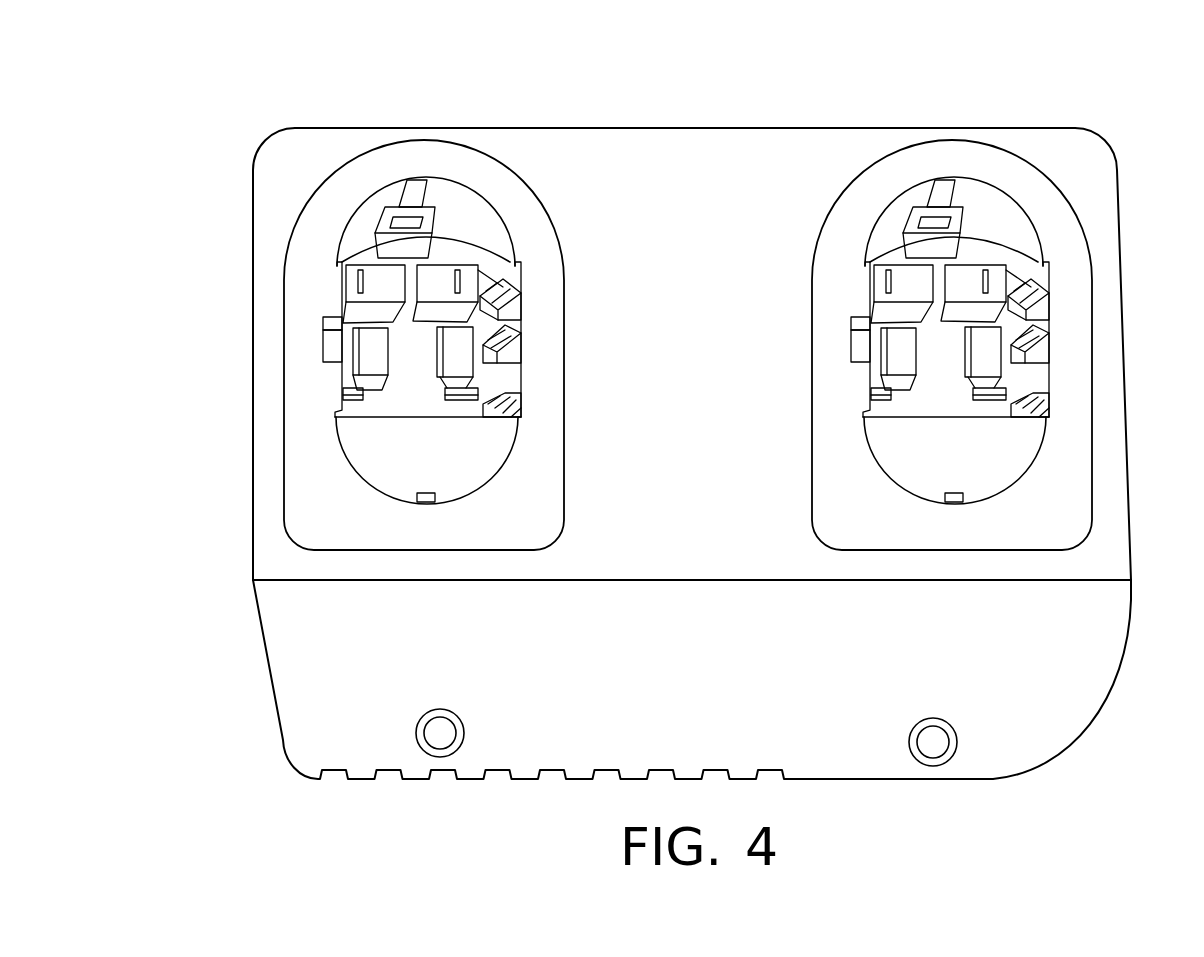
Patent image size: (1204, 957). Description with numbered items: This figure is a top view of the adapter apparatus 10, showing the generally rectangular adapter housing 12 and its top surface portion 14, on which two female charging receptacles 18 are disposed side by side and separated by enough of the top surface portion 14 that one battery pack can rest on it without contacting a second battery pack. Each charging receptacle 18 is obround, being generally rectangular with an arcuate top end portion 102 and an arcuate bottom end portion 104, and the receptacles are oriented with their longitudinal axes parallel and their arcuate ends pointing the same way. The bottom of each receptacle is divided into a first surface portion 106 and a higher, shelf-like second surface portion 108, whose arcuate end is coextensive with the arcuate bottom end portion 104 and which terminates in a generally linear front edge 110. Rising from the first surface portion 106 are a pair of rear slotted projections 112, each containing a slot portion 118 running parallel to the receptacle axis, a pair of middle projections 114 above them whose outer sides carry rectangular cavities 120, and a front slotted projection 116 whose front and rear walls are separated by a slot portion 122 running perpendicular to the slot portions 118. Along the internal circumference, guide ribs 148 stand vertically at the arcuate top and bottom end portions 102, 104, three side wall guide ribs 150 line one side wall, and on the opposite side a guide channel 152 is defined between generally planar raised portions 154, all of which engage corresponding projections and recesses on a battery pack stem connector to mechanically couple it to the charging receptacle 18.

The adapter apparatus 10 is at (466, 70).
The adapter housing 12 is at (680, 128).
The top surface portion 14 is at (743, 265).
The female charging receptacles 18 is at (488, 163).
The arcuate top end portion 102 is at (349, 152).
The arcuate bottom end portion 104 is at (466, 494).
The first surface portion 106 is at (507, 390).
The second surface portion 108 is at (387, 463).
The front edge 110 is at (397, 407).
The rear slotted projections 112 is at (457, 348).
The middle projections 114 is at (440, 277).
The front slotted projection 116 is at (415, 250).
The slot portion 118 is at (480, 370).
The rectangular cavities 120 is at (483, 296).
The slot portion 122 is at (407, 180).
The guide ribs 148 is at (984, 295).
The side wall guide ribs 150 is at (1097, 346).
The guide channel 152 is at (810, 339).
The raised portions 154 is at (878, 335).